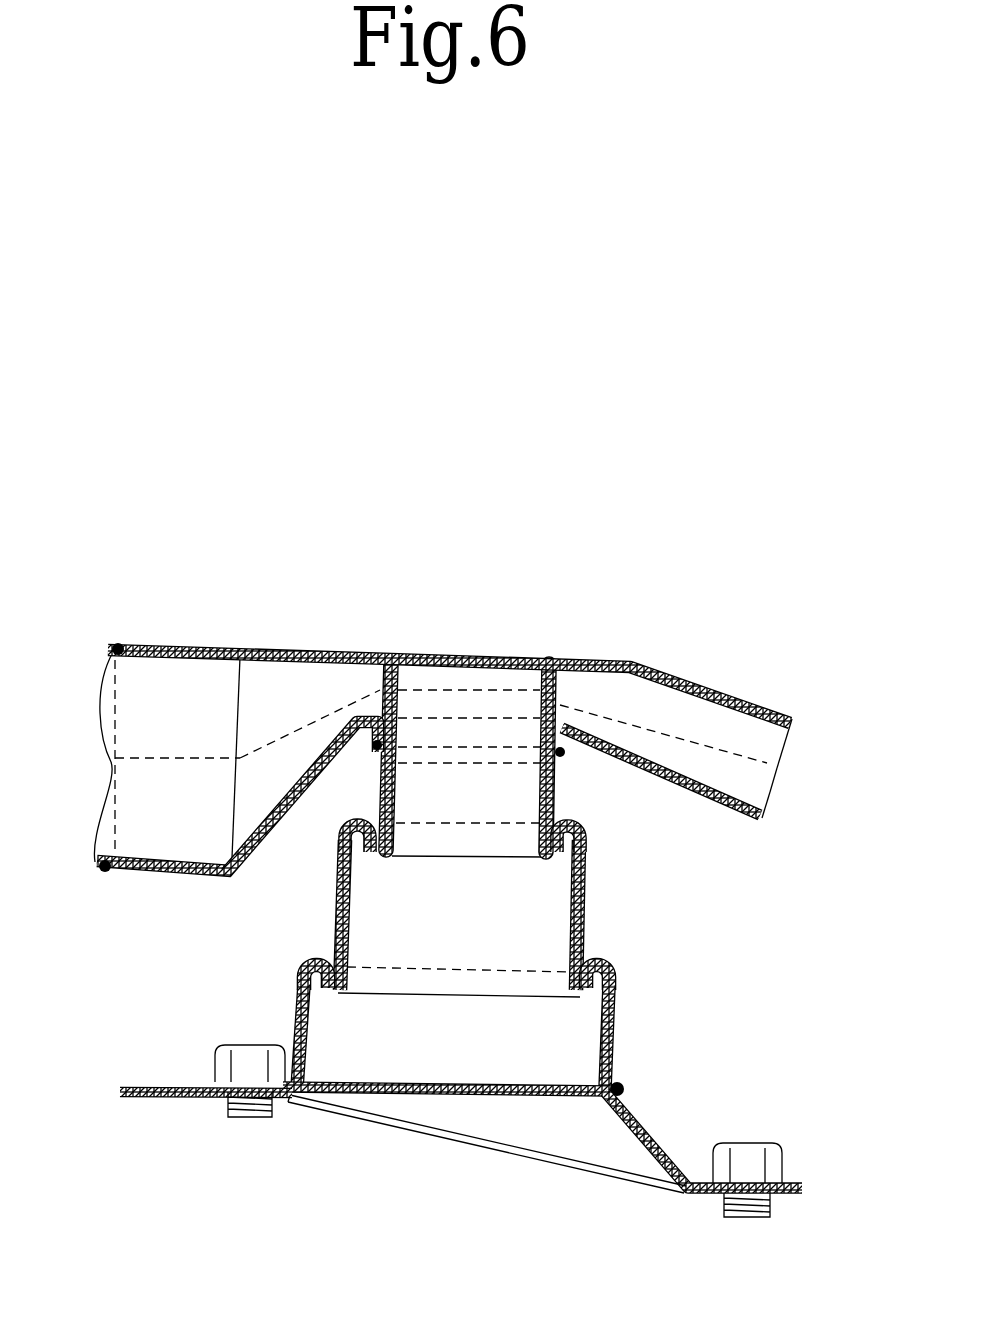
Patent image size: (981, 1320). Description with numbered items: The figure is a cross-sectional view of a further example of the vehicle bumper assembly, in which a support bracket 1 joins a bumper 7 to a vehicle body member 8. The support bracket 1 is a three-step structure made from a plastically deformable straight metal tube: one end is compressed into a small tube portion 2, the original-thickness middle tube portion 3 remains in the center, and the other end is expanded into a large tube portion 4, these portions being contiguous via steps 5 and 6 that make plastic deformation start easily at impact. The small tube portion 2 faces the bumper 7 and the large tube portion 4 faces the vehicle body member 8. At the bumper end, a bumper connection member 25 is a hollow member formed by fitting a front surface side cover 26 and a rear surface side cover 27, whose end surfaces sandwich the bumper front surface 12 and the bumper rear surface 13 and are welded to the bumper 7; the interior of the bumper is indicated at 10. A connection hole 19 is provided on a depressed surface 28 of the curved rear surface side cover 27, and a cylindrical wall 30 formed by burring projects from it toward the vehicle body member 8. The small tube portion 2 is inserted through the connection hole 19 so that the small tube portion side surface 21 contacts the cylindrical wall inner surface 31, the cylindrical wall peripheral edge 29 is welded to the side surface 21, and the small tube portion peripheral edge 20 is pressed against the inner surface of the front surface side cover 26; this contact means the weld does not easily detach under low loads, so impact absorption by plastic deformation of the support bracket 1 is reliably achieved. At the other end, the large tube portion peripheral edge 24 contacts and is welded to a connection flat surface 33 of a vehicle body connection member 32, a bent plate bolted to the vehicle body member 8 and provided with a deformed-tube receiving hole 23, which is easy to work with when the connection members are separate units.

The support bracket 1 is at (558, 938).
The small tube portion 2 is at (513, 787).
The middle tube portion 3 is at (390, 920).
The large tube portion 4 is at (580, 1045).
The step 5 is at (583, 857).
The step 6 is at (320, 968).
The bumper 7 is at (160, 690).
The vehicle body member 8 is at (312, 1117).
The inlet pipe 10 is at (160, 785).
The bumper front surface 12 is at (192, 664).
The bumper rear surface 13 is at (152, 875).
The connection hole 19 is at (438, 747).
The small tube portion peripheral edge 20 is at (443, 660).
The small tube portion side surface 21 is at (552, 722).
The deformed-tube receiving hole 23 is at (447, 1095).
The large tube portion peripheral edge 24 is at (284, 1076).
The bumper connection member 25 is at (737, 706).
The front surface side cover 26 is at (772, 747).
The rear surface side cover 27 is at (763, 788).
The depressed surface 28 is at (350, 722).
The cylindrical wall peripheral edge 29 is at (363, 760).
The cylindrical wall 30 is at (572, 728).
The cylindrical wall inner surface 31 is at (558, 750).
The vehicle body connection member 32 is at (684, 1134).
The connection flat surface 33 is at (560, 1095).